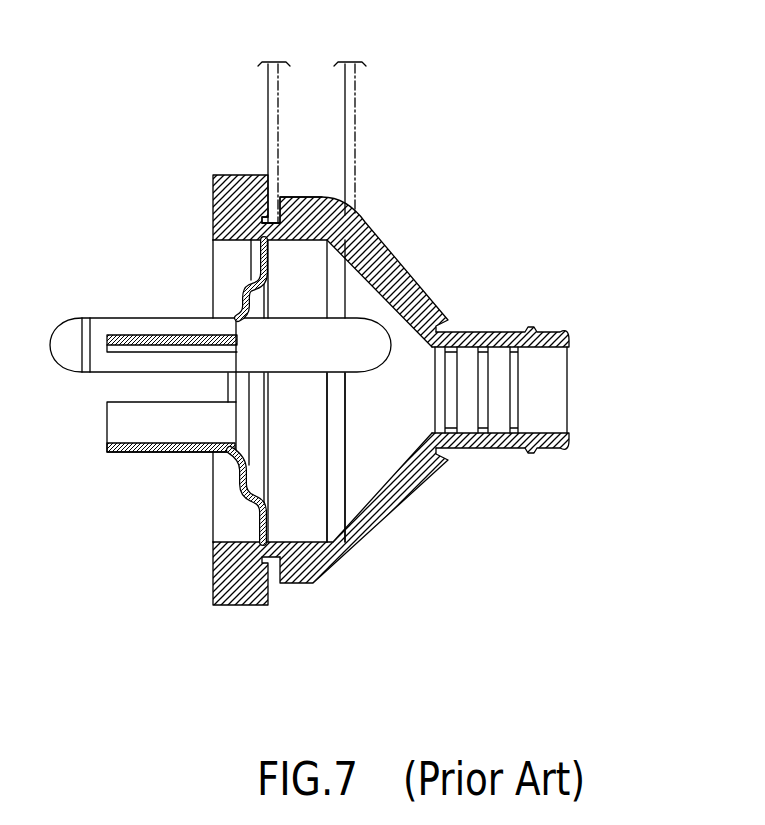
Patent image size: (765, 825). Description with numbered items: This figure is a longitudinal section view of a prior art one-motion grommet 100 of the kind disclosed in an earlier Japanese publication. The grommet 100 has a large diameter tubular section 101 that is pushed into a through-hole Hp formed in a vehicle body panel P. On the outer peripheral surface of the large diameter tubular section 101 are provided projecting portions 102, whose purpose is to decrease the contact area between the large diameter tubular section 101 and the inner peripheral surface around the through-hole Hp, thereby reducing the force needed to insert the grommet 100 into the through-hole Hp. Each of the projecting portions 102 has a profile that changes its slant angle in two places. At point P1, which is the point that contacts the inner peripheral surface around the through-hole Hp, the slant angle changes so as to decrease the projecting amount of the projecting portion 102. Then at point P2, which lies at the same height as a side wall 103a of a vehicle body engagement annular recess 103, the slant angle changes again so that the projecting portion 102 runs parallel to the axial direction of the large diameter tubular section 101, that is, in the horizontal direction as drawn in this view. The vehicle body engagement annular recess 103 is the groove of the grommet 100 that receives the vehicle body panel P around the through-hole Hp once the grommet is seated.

The grommet 100 is at (157, 317).
The large diameter tubular section 101 is at (390, 235).
The projecting portions 102 is at (398, 260).
The vehicle body engagement annular recess 103 is at (273, 585).
The side wall 103a is at (281, 583).
The vehicle body panel P is at (264, 117).
The point of slant angle change P1 is at (373, 500).
The point of second slant angle change P2 is at (314, 542).
The through-hole Hp is at (363, 217).